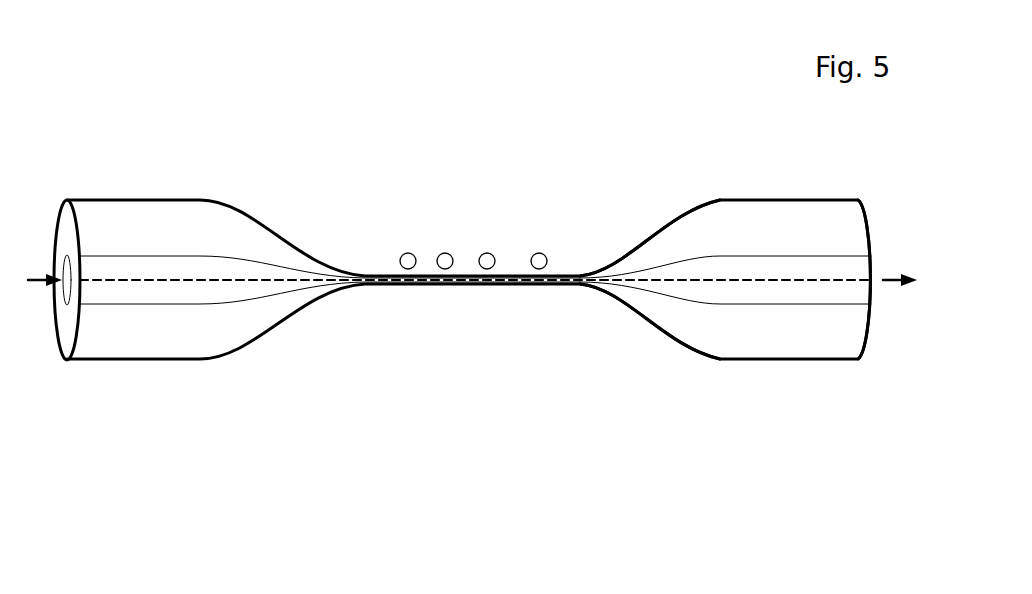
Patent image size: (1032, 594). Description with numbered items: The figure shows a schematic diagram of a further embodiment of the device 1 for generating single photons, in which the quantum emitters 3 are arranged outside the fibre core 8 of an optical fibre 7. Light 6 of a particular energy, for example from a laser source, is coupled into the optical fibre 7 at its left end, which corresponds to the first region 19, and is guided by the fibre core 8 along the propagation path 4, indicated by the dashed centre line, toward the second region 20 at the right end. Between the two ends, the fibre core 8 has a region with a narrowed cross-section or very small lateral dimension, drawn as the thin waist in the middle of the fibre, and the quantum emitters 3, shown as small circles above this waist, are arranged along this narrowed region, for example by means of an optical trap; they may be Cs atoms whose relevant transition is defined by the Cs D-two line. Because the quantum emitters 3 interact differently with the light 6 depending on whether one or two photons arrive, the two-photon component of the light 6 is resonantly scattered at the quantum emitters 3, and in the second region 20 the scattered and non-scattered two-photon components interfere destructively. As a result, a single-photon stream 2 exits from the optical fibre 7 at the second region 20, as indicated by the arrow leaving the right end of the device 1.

The device 1 is at (761, 468).
The single-photon stream 2 is at (888, 283).
The quantum emitters 3 is at (405, 253).
The propagation path 4 is at (213, 283).
The light 6 is at (36, 283).
The optical fibre 7 is at (725, 307).
The fibre core 8 is at (673, 313).
The first region 19 is at (60, 253).
The second region 20 is at (877, 266).